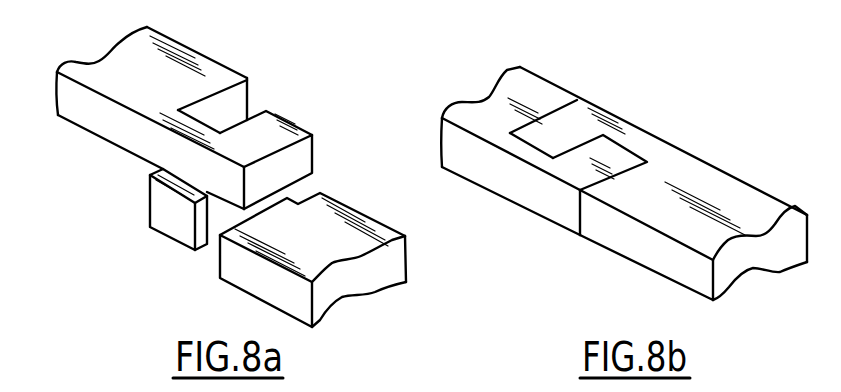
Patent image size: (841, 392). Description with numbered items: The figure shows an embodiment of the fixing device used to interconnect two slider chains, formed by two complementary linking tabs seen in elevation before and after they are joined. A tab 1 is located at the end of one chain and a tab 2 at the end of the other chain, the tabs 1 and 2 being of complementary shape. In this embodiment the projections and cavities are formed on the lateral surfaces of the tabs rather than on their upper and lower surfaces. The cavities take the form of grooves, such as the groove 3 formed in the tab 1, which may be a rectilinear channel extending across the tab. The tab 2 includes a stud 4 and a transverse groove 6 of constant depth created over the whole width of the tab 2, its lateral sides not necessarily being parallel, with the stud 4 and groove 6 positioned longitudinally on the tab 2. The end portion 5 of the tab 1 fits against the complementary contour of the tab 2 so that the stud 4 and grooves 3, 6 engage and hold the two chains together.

In FIG. 8A, the tab 1 is at (53, 100).
In FIG. 8B, the tab 1 is at (479, 94).
In FIG. 8A, the tab 2 is at (375, 212).
In FIG. 8B, the tab 2 is at (740, 174).
In FIG. 8A, the groove 3 is at (254, 108).
In FIG. 8A, the stud 4 is at (168, 222).
In FIG. 8A, the end portion of first bar member 5 is at (297, 128).
In FIG. 8A, the transverse groove 6 is at (225, 218).